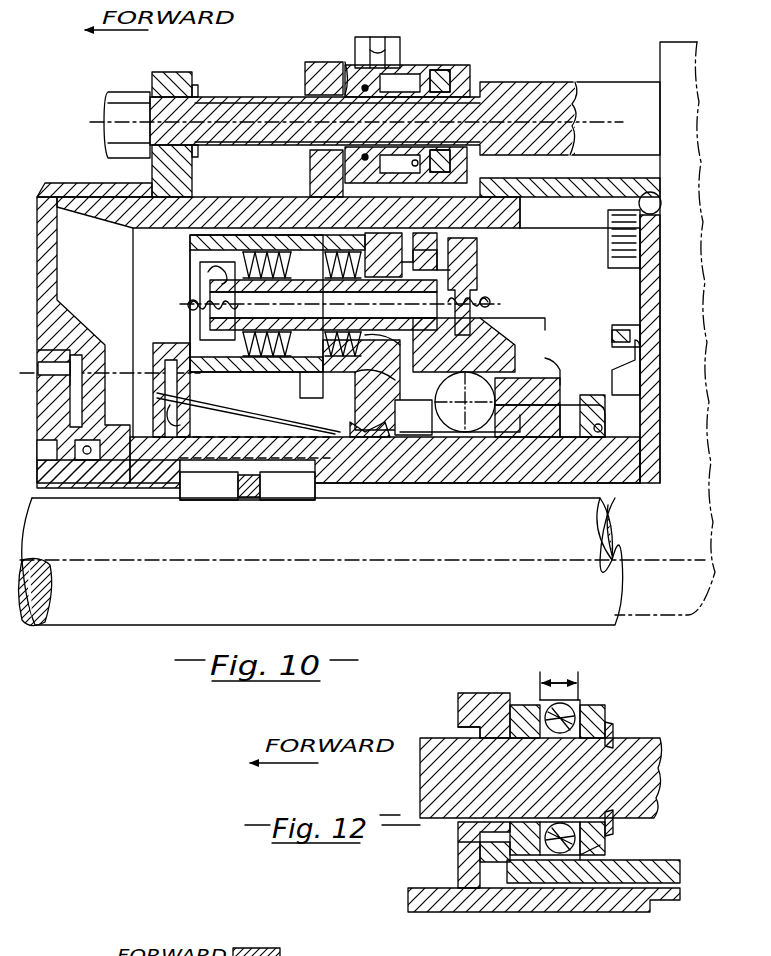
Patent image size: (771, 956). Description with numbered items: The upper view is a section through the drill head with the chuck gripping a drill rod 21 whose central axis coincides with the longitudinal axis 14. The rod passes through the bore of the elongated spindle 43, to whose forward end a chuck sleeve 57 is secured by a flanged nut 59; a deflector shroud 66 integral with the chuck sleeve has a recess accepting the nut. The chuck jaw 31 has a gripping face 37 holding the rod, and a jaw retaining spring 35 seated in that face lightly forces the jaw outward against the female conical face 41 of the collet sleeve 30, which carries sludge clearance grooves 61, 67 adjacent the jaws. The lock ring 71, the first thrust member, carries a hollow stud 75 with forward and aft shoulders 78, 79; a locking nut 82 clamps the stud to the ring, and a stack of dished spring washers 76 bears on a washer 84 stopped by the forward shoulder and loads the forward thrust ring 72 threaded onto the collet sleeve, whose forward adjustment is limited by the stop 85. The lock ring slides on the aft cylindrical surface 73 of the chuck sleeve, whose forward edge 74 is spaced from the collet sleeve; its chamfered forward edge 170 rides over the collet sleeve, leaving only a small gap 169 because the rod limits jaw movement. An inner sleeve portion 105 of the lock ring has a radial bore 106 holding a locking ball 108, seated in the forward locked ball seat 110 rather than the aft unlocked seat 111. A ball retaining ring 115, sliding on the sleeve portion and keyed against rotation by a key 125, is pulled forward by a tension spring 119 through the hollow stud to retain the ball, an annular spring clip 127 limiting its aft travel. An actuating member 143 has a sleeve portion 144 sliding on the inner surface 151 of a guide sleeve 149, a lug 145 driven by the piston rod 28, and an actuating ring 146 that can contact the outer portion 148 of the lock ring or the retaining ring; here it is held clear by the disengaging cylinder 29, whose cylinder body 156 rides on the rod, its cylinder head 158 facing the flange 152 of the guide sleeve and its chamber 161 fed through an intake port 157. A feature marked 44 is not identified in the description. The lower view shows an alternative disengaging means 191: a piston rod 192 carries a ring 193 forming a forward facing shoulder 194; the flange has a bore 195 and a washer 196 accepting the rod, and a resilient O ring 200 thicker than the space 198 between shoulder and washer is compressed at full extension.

In FIG. 10, the longitudinal axis 14 is at (612, 556).
In FIG. 10, the drill rod 21 is at (133, 606).
In FIG. 10, the piston rod 28 is at (548, 82).
In FIG. 10, the disengaging cylinder 29 is at (401, 100).
In FIG. 10, the collet sleeve 30 is at (160, 345).
In FIG. 12, the collet sleeve 30 is at (268, 955).
In FIG. 10, the chuck jaw 31 is at (183, 472).
In FIG. 10, the jaw retaining spring 35 is at (252, 498).
In FIG. 10, the gripping face 37 is at (183, 500).
In FIG. 10, the female conical face 41 is at (180, 418).
In FIG. 10, the spindle 43 is at (460, 480).
In FIG. 10, the frame 44 is at (668, 524).
In FIG. 10, the chuck sleeve 57 is at (395, 465).
In FIG. 10, the flanged nut 59 is at (75, 462).
In FIG. 10, the sludge clearance groove 61 is at (248, 405).
In FIG. 10, the deflector shroud 66 is at (55, 268).
In FIG. 10, the sludge clearance groove 67 is at (375, 374).
In FIG. 10, the lock ring 71 is at (420, 235).
In FIG. 10, the forward thrust ring 72 is at (185, 258).
In FIG. 10, the aft cylindrical surface 73 is at (570, 410).
In FIG. 10, the forward edge 74 is at (465, 402).
In FIG. 10, the hollow stud 75 is at (310, 265).
In FIG. 10, the stack of spring washers 76 is at (305, 262).
In FIG. 10, the forward shoulder 78 is at (215, 272).
In FIG. 10, the aft shoulder 79 is at (361, 379).
In FIG. 10, the locking nut 82 is at (425, 275).
In FIG. 10, the washer 84 is at (240, 258).
In FIG. 10, the stop 85 is at (318, 380).
In FIG. 10, the inner sleeve portion 105 is at (575, 390).
In FIG. 10, the radially disposed bore 106 is at (527, 391).
In FIG. 10, the locking ball 108 is at (460, 433).
In FIG. 10, the forward ball seat 110 is at (527, 421).
In FIG. 10, the aft ball seat 111 is at (560, 410).
In FIG. 10, the ball retaining ring 115 is at (505, 328).
In FIG. 10, the tension spring 119 is at (192, 310).
In FIG. 10, the key 125 is at (464, 345).
In FIG. 10, the annular spring clip 127 is at (555, 370).
In FIG. 10, the actuating member 143 is at (115, 210).
In FIG. 12, the actuating member 143 is at (548, 905).
In FIG. 10, the sleeve portion 144 is at (515, 190).
In FIG. 10, the lug 145 is at (150, 75).
In FIG. 10, the actuating ring 146 is at (495, 245).
In FIG. 10, the outer portion 148 is at (405, 240).
In FIG. 10, the guide sleeve 149 is at (555, 182).
In FIG. 10, the inner surface 151 is at (550, 200).
In FIG. 10, the flange 152 is at (320, 62).
In FIG. 12, the flange 152 is at (460, 708).
In FIG. 10, the cylinder body 156 is at (455, 66).
In FIG. 10, the intake port 157 is at (385, 40).
In FIG. 10, the cylinder head 158 is at (347, 60).
In FIG. 10, the chamber 161 is at (402, 76).
In FIG. 10, the gap 169 is at (340, 402).
In FIG. 10, the chamfered forward edge 170 is at (368, 410).
In FIG. 12, the alternative disengaging means 191 is at (648, 688).
In FIG. 12, the alternative piston rod 192 is at (615, 750).
In FIG. 12, the ring 193 is at (612, 712).
In FIG. 12, the forward facing shoulder 194 is at (572, 708).
In FIG. 12, the bore 195 is at (458, 735).
In FIG. 12, the washer 196 is at (538, 700).
In FIG. 12, the space 198 is at (557, 682).
In FIG. 12, the O ring 200 is at (595, 840).